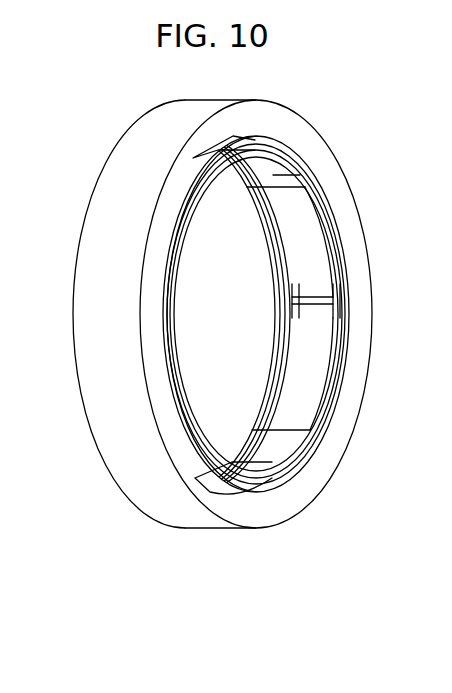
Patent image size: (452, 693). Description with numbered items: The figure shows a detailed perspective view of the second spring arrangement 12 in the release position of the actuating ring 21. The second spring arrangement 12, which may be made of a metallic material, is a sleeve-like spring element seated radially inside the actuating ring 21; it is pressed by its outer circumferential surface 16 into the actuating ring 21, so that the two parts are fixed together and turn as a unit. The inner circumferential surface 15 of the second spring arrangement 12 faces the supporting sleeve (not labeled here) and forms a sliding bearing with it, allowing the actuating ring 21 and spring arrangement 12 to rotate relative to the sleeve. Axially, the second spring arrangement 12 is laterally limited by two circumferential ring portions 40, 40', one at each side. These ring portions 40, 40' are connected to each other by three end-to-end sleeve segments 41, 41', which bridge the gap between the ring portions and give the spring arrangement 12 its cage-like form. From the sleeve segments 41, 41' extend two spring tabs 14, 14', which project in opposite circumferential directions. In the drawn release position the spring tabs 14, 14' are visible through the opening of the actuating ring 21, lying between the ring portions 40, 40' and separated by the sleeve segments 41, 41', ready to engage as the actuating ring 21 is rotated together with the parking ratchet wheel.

The second spring arrangement 12 is at (238, 205).
The actuating ring 21 is at (122, 182).
The inner circumferential surface 15 is at (290, 445).
The spring tab 14 is at (328, 221).
The spring tab 14' is at (323, 407).
The circumferential ring portion 40 is at (355, 311).
The circumferential ring portion 40' is at (263, 302).
The outer circumferential surface 16 is at (257, 146).
The sleeve segment 41 is at (331, 140).
The sleeve segment 41' is at (242, 518).